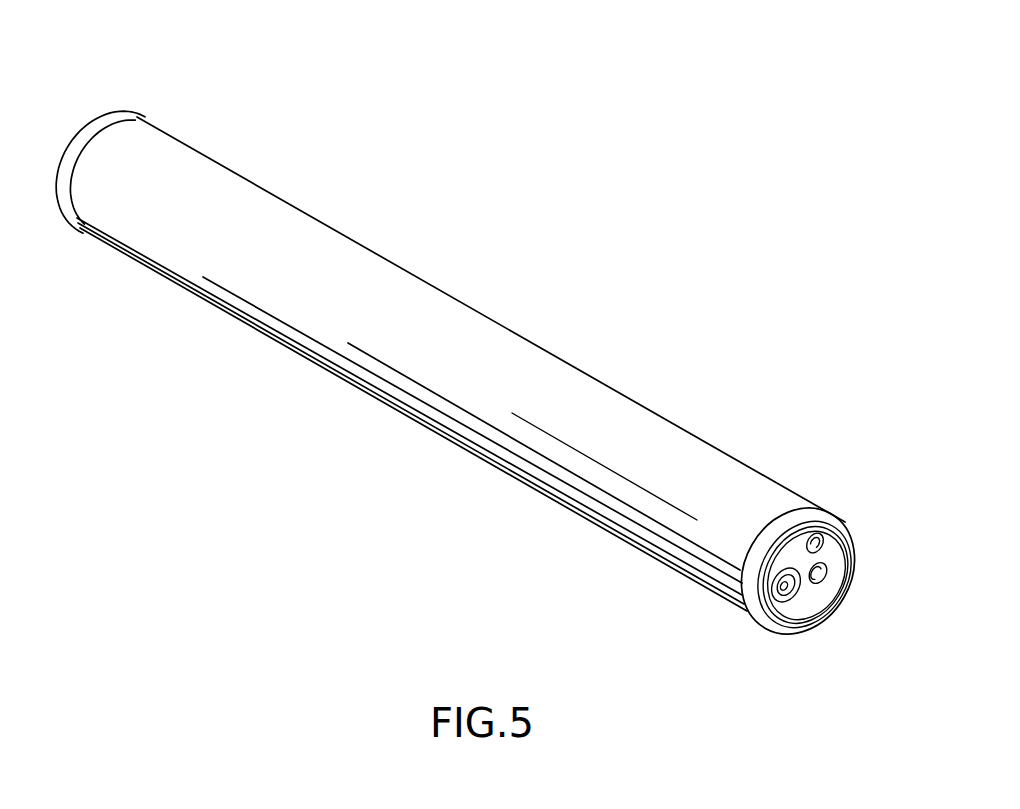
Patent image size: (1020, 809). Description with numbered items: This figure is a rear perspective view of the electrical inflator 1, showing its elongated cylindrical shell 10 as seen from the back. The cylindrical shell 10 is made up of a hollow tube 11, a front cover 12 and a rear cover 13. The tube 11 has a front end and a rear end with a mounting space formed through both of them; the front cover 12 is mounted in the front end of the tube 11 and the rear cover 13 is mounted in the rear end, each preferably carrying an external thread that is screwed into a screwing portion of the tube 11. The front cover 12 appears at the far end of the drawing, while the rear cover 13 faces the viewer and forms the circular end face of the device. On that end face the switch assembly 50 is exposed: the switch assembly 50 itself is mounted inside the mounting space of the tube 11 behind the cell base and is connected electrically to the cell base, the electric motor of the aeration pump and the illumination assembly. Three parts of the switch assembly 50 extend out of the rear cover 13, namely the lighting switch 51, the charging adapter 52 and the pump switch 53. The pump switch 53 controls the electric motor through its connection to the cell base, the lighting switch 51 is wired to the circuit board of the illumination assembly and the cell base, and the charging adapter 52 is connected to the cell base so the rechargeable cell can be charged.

The electrical inflator 1 is at (637, 305).
The cylindrical shell 10 is at (482, 278).
The tube 11 is at (325, 237).
The front cover 12 is at (102, 123).
The rear cover 13 is at (800, 514).
The switch assembly 50 is at (837, 550).
The lighting switch 51 is at (818, 541).
The charging adapter 52 is at (825, 582).
The pump switch 53 is at (791, 590).